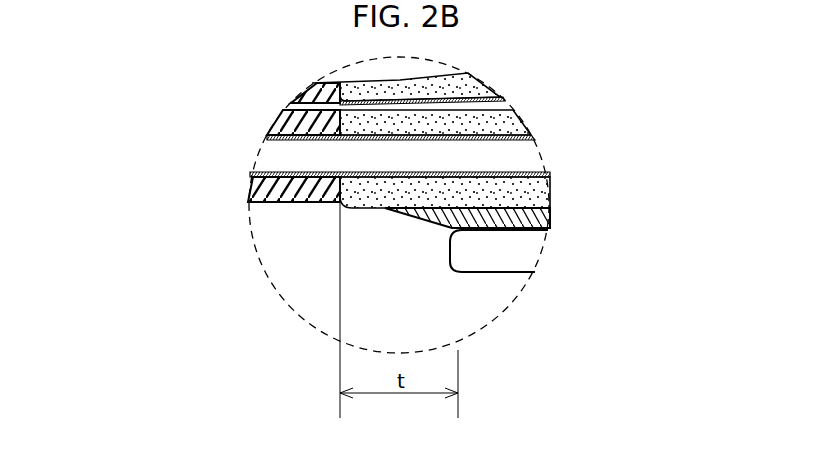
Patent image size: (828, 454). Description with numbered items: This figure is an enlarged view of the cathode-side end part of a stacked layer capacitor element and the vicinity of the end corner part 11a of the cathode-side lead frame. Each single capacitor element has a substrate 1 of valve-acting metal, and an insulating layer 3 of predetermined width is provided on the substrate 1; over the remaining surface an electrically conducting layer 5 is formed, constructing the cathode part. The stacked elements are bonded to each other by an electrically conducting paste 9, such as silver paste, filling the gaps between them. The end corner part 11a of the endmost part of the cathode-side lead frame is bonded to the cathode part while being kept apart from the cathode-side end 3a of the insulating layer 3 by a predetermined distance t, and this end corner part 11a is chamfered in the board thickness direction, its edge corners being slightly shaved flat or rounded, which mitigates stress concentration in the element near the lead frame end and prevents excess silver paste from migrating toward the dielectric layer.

The substrate 1 is at (527, 161).
The insulating layer 3 is at (277, 124).
The cathode-side end of the insulating layer 3a is at (332, 203).
The electrically conducting layer 5 is at (520, 120).
The electrically conducting paste 9 is at (552, 205).
The end corner part of the cathode-side lead frame 11a is at (497, 263).